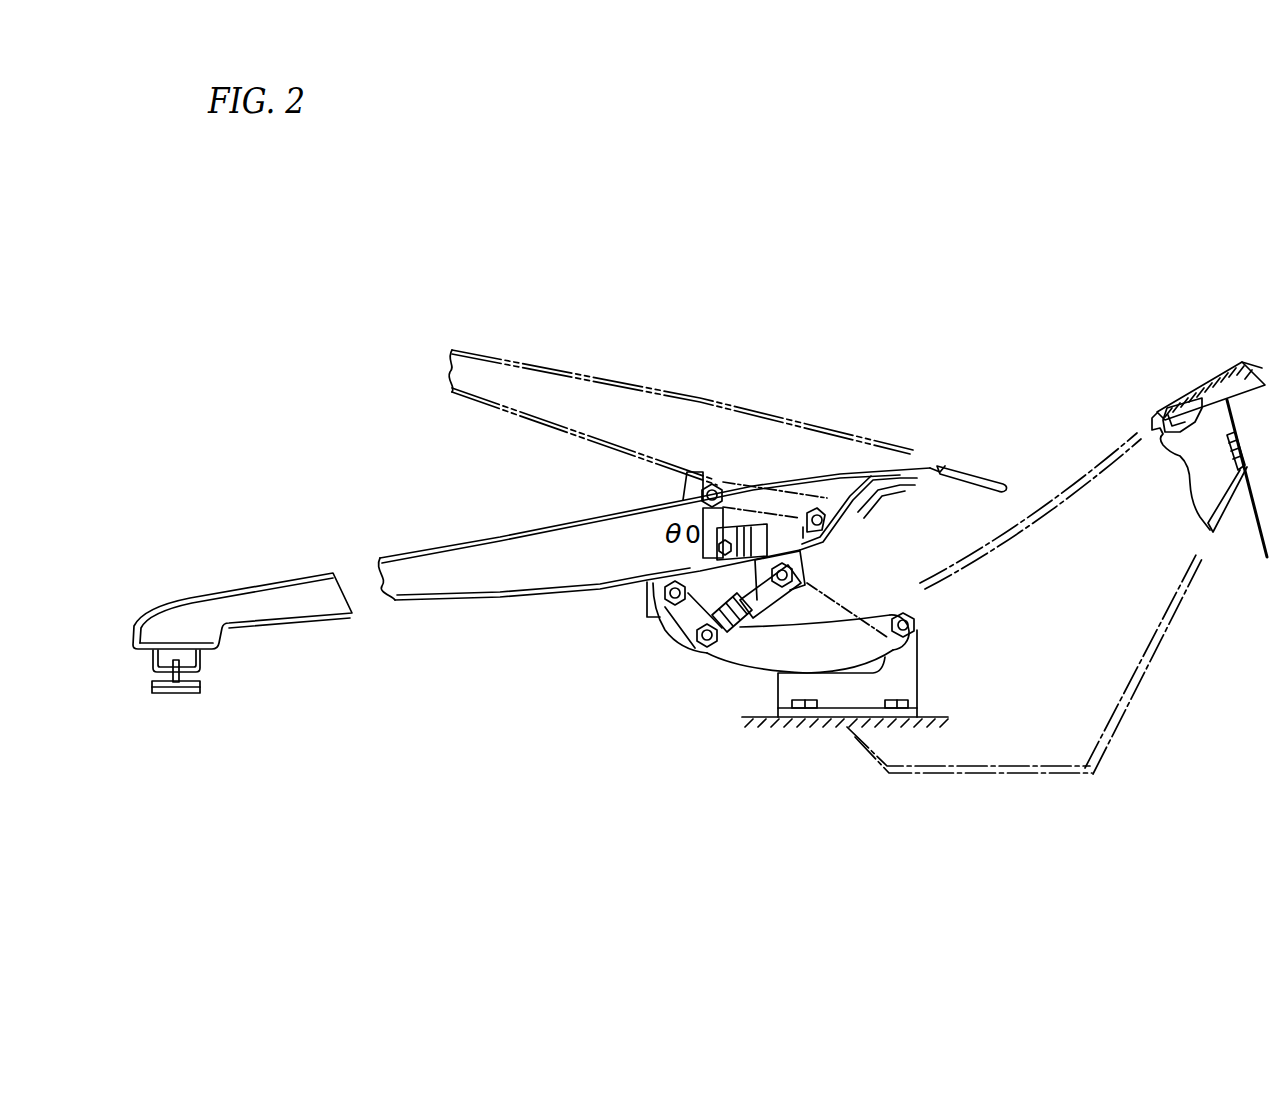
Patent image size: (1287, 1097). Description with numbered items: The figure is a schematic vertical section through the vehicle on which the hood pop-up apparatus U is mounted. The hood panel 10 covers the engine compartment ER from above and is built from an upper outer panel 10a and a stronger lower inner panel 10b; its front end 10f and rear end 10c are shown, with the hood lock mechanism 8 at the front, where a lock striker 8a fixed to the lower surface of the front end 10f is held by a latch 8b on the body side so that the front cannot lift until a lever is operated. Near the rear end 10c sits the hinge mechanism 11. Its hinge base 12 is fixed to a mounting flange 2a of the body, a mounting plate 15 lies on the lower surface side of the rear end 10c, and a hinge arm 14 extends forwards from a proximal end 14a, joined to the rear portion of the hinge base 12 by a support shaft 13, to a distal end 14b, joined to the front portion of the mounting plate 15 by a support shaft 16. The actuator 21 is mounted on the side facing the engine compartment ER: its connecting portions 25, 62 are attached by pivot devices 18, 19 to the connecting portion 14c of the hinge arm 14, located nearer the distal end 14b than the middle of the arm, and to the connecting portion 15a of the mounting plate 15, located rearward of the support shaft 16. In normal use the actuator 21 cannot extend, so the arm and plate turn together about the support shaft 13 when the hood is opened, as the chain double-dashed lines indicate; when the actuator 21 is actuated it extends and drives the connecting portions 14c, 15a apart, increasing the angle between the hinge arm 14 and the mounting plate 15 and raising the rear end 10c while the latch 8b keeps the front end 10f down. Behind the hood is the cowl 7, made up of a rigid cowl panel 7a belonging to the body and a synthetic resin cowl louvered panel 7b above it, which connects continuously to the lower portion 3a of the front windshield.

The hood panel 10 is at (598, 504).
The outer panel 10a is at (455, 542).
The inner panel 10b is at (457, 598).
The rear end 10c is at (927, 440).
The front end 10f is at (143, 585).
The hood lock mechanism 8 is at (203, 742).
The lock striker 8a is at (203, 670).
The latch 8b is at (178, 664).
The engine compartment ER is at (395, 790).
The hood pop-up apparatus U is at (560, 687).
The hinge mechanism 11 is at (680, 650).
The hinge base 12 is at (913, 683).
The support shaft 13 is at (920, 624).
The hinge arm 14 is at (745, 650).
The proximal end 14a is at (913, 605).
The distal end 14b is at (688, 640).
The connecting portion 14c is at (690, 657).
The mounting plate 15 is at (677, 570).
The connecting portion 15a is at (807, 527).
The support shaft 16 is at (650, 603).
The pivot device 18 is at (705, 647).
The pivot device 19 is at (773, 550).
The actuator 21 is at (752, 624).
The connecting portion 25 is at (657, 685).
The connecting portion 62 is at (747, 550).
The mounting flange 2a is at (937, 722).
The lower portion 3a is at (1192, 370).
The cowl 7 is at (1185, 602).
The cowl panel 7a is at (1220, 530).
The cowl louvered panel 7b is at (1100, 460).